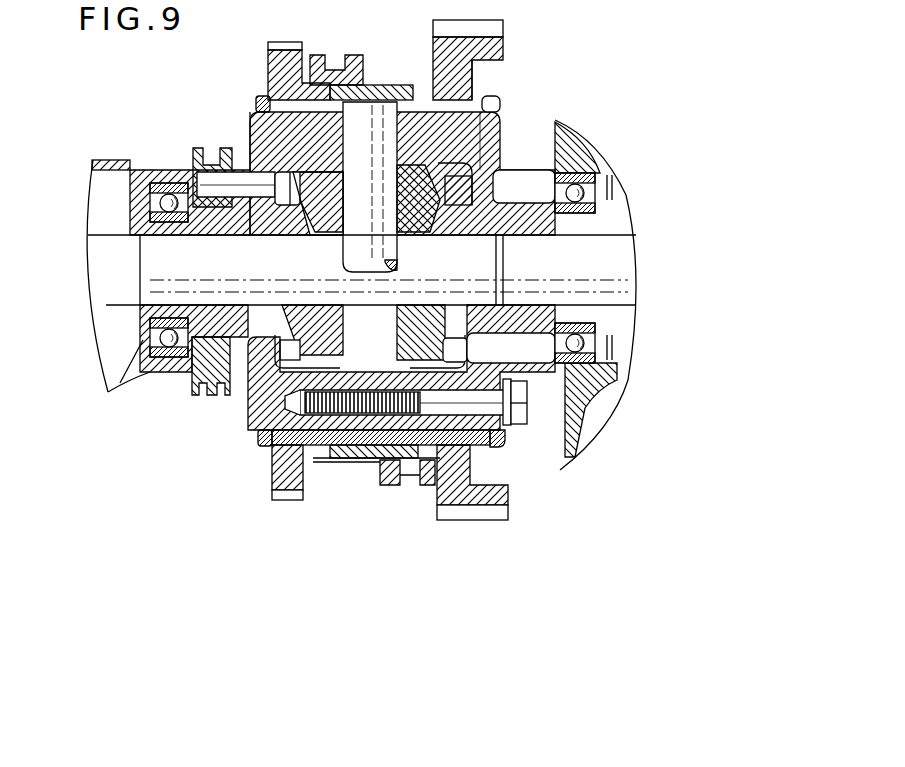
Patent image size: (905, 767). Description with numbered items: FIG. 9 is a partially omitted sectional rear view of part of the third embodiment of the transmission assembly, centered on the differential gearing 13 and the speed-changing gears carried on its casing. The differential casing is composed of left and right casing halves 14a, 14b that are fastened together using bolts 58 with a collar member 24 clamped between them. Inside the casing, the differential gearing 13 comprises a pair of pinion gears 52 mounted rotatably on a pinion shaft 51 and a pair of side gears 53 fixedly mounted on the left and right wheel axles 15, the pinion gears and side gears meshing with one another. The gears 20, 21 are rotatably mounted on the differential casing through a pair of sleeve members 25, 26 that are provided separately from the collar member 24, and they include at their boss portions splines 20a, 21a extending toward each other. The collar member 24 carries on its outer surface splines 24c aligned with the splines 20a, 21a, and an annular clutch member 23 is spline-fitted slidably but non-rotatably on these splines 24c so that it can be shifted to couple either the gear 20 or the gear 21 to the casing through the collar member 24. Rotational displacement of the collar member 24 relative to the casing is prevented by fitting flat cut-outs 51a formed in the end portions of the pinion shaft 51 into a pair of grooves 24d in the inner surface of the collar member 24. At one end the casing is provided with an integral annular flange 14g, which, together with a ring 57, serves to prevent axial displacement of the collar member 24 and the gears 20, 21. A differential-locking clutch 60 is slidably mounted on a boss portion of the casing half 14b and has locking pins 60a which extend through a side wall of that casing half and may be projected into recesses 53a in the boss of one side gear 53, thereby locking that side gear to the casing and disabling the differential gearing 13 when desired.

The differential gearing 13 is at (218, 414).
The left casing half 14a is at (482, 362).
The right casing half 14b is at (258, 133).
The annular flange 14g is at (490, 118).
The wheel axle 15 is at (107, 260).
The gear 20 is at (487, 29).
The splines 20a is at (468, 76).
The gear 21 is at (270, 48).
The splines 21a is at (314, 470).
The clutch member 23 is at (353, 57).
The collar member 24 is at (351, 455).
The splines 24c is at (370, 472).
The grooves 24d is at (480, 147).
The sleeve member 25 is at (486, 103).
The sleeve member 26 is at (256, 99).
The pinion shaft 51 is at (373, 274).
The flat cut-outs 51a is at (388, 102).
The pinion gear 52 is at (383, 258).
The side gear 53 is at (305, 358).
The recesses 53a is at (210, 183).
The ring 57 is at (270, 447).
The bolt 58 is at (258, 440).
The differential-locking clutch 60 is at (193, 383).
The locking pins 60a is at (170, 182).